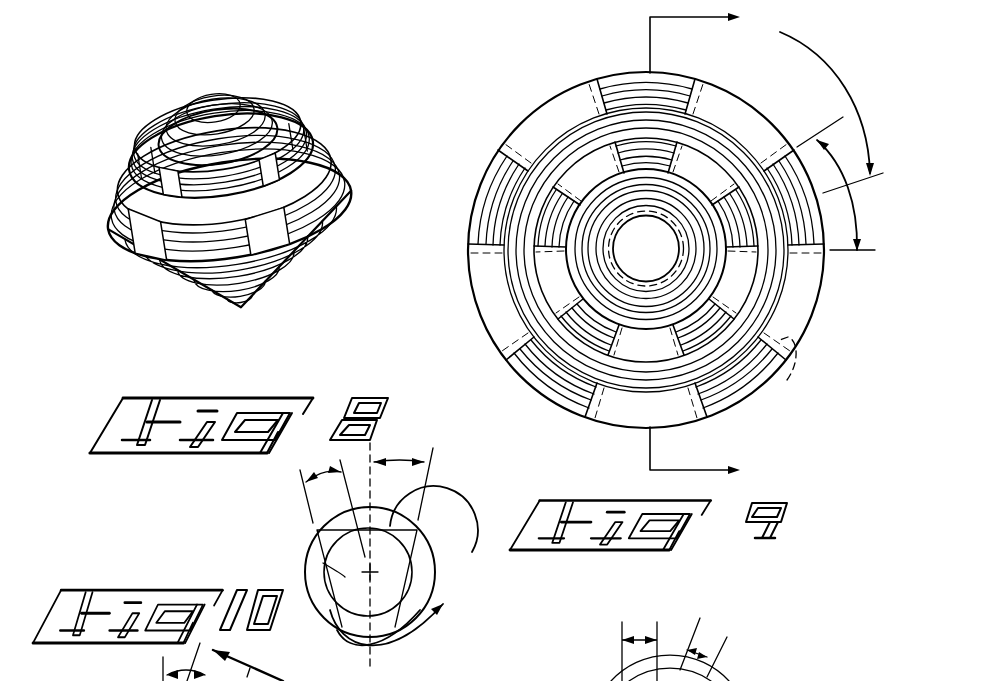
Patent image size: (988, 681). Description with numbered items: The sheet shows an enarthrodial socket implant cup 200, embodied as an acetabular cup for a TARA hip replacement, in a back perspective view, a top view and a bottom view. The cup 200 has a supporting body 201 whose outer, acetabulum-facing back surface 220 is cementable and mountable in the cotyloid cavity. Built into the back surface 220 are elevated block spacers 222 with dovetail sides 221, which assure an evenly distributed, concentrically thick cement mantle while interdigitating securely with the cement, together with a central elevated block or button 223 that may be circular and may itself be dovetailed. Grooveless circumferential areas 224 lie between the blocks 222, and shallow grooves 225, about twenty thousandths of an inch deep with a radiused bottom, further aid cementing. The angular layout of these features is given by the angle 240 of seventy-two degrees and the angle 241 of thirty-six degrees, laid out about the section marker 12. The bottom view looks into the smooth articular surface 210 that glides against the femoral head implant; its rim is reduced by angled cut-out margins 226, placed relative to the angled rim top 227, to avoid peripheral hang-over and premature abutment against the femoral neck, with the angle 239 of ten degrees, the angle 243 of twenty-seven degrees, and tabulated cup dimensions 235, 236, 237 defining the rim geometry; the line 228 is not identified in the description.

In FIG. 9, the section line 12- 12 is at (720, 249).
In FIG. 8, the head-receiving socket implant cup 200 is at (160, 63).
In FIG. 9, the head-receiving socket implant cup 200 is at (578, 68).
In FIG. 10, the head-receiving socket implant cup 200 is at (613, 668).
In FIG. 9, the supporting body 201 is at (787, 380).
In FIG. 10, the articular surface 210 is at (302, 575).
In FIG. 8, the back surface 220 is at (157, 127).
In FIG. 9, the back surface 220 is at (557, 217).
In FIG. 9, the dovetail sides 221 is at (482, 267).
In FIG. 8, the elevated block spacers 222 is at (160, 167).
In FIG. 9, the elevated block spacers 222 is at (527, 150).
In FIG. 10, the elevated block spacers 222 is at (755, 671).
In FIG. 8, the central elevated block or button 223 is at (243, 100).
In FIG. 9, the central elevated block or button 223 is at (633, 247).
In FIG. 8, the grooveless circumferential areas 224 is at (141, 217).
In FIG. 9, the grooveless circumferential areas 224 is at (562, 325).
In FIG. 8, the grooves 225 is at (165, 257).
In FIG. 9, the grooves 225 is at (568, 390).
In FIG. 10, the cut-out margins 226 is at (427, 614).
In FIG. 10, the rim top 227 is at (447, 522).
In FIG. 10, the curve 228 is at (345, 577).
In FIG. 10, the cup dimension 235 is at (715, 640).
In FIG. 10, the cup dimension 236 is at (640, 627).
In FIG. 10, the cup dimension 237 is at (308, 495).
In FIG. 10, the angle 239 is at (415, 470).
In FIG. 9, the angle 240 is at (780, 32).
In FIG. 9, the angle 241 is at (860, 228).
In FIG. 10, the angle 243 is at (160, 652).